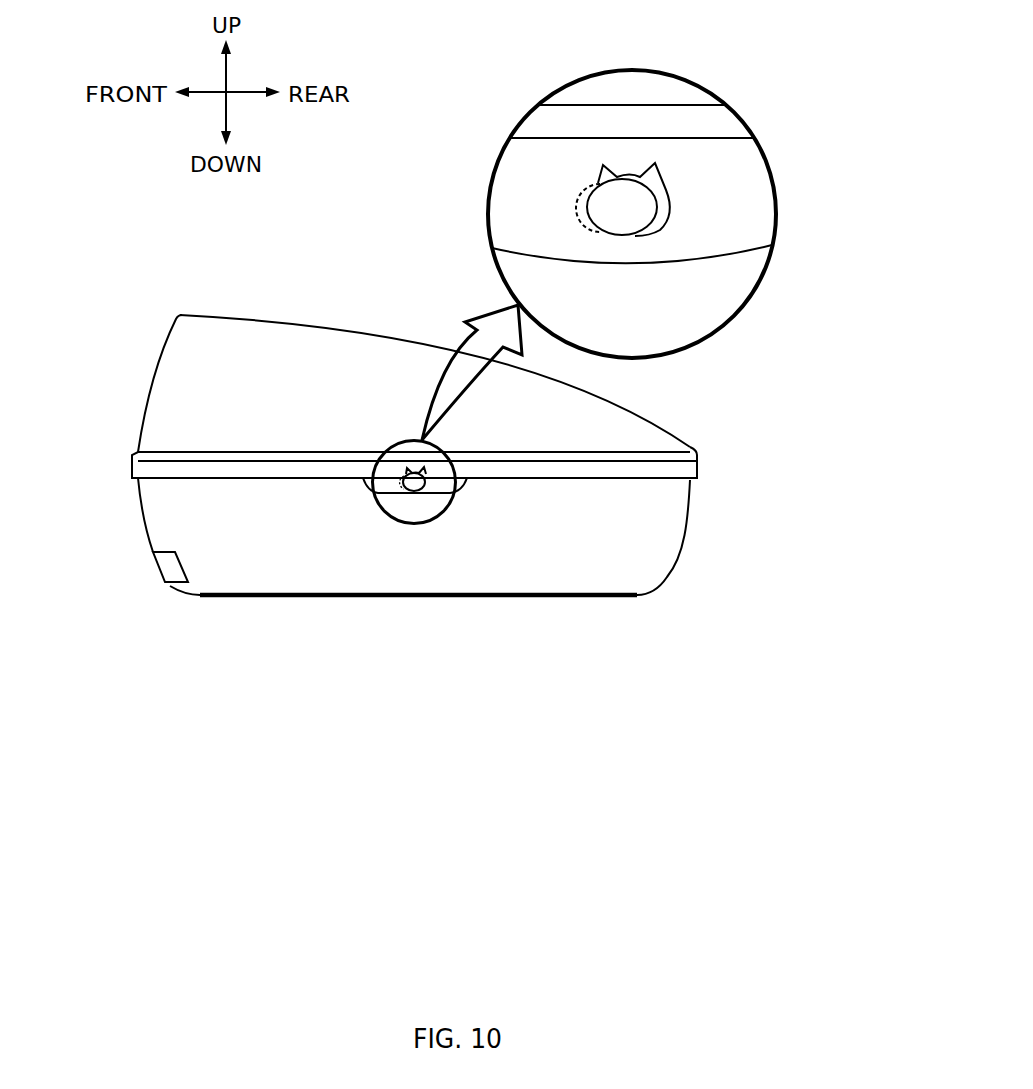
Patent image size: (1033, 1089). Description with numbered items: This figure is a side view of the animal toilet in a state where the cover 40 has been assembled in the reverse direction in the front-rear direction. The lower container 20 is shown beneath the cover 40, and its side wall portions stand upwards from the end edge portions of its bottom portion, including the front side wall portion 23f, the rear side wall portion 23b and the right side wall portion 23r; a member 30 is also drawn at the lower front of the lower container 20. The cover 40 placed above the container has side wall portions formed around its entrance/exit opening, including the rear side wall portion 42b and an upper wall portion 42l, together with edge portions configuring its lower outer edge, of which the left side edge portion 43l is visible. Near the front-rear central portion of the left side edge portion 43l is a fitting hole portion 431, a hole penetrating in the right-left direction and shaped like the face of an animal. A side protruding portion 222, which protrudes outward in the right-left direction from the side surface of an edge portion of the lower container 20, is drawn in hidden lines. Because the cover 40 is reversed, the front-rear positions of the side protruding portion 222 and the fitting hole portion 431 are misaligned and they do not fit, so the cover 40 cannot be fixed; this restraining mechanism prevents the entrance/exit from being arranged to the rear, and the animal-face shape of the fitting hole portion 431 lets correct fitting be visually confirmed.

The lower container 20 is at (417, 561).
The front side wall portion 23f is at (142, 515).
The rear side wall portion 23b is at (685, 513).
The right side wall portion 23r is at (303, 570).
The lock/handle member 30 is at (152, 575).
The cover 40 is at (384, 354).
The rear side wall portion 42b is at (158, 357).
The upper surface of lid 42l is at (352, 352).
The left side edge portion 43l is at (242, 468).
The side protruding portion 222 is at (577, 208).
The fitting hole portion 431 is at (673, 210).